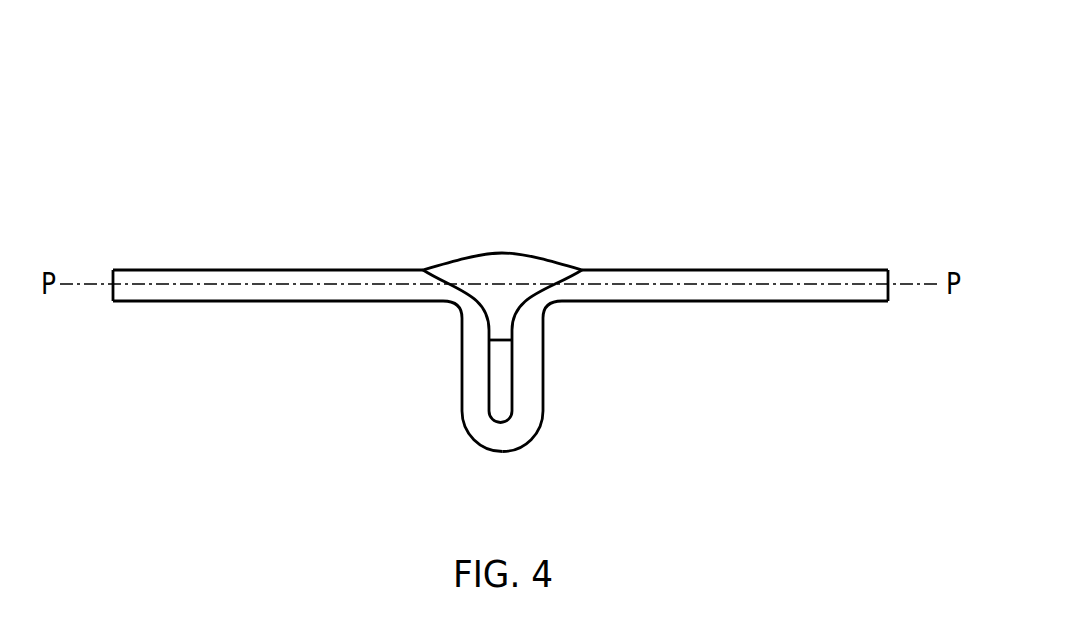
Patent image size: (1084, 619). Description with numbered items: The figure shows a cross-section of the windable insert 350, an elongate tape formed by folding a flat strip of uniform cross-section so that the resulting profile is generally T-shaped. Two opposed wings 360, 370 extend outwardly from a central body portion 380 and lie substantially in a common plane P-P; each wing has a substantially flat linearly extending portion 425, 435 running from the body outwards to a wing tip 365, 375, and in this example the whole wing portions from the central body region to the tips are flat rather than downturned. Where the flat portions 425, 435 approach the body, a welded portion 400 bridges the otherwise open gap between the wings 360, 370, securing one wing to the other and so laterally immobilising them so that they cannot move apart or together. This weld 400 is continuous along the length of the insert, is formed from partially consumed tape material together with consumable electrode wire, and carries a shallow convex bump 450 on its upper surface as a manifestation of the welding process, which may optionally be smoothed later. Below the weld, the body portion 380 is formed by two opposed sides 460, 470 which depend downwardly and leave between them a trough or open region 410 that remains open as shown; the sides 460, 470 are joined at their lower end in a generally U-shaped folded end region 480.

The windable insert 350 is at (641, 84).
The wing tip 375 is at (137, 199).
The wing tip 365 is at (870, 207).
The wing 370 is at (312, 280).
The substantially flat linearly extending portion 435 is at (223, 292).
The wing 360 is at (723, 280).
The substantially flat linearly extending portion 425 is at (730, 292).
The welded portion 400 is at (500, 283).
The shallow convex bump 450 is at (508, 252).
The trough region 410 is at (500, 372).
The side of body portion 470 is at (472, 373).
The side of body portion 460 is at (535, 393).
The body portion 380 is at (467, 407).
The U-shaped folded end region 480 is at (500, 437).